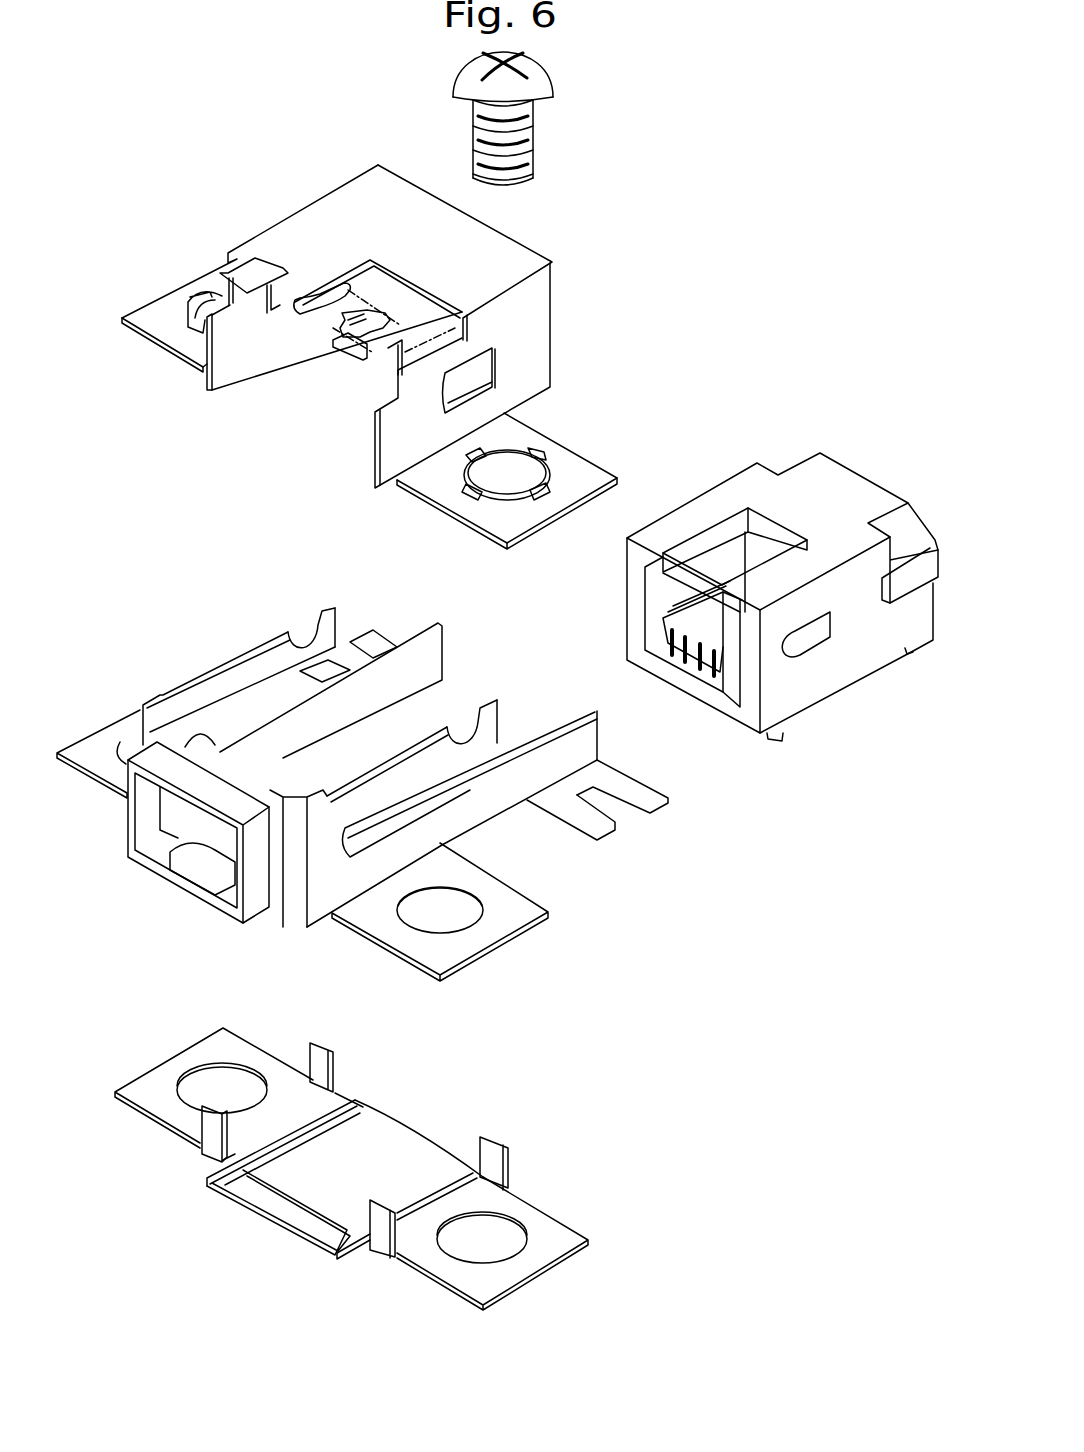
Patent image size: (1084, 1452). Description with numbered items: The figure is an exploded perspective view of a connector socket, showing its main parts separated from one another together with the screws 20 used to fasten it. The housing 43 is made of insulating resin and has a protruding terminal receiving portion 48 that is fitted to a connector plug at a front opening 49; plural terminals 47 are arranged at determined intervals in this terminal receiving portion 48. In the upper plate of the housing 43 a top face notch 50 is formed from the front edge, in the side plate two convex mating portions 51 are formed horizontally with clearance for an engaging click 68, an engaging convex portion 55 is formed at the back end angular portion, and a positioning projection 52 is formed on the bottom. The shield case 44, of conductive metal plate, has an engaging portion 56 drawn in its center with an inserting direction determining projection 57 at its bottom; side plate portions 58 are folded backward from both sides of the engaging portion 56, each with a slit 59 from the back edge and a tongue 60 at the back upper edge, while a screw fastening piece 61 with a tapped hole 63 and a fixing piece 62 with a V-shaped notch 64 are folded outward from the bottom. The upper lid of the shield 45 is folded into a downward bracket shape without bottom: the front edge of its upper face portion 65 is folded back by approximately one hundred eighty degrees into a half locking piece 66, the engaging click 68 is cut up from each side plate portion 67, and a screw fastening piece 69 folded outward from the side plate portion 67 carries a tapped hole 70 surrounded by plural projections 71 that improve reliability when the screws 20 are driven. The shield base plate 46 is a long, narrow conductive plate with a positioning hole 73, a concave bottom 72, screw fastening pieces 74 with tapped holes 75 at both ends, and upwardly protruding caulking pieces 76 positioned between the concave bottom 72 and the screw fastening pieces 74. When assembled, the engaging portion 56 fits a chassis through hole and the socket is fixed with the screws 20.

The screws 20 is at (540, 78).
The housing 43 is at (771, 616).
The shield case 44 is at (368, 776).
The upper lid of the shield 45 is at (372, 351).
The shield base plate 46 is at (368, 1154).
The terminals 47 is at (693, 625).
The terminal receiving portion 48 is at (735, 667).
The front opening 49 is at (653, 613).
The top face notch 50 is at (730, 540).
The convex mating portion 51 is at (880, 603).
The positioning projection 52 is at (780, 732).
The engaging convex portion 55 is at (922, 530).
The engaging portion 56 is at (147, 833).
The inserting direction determining projection 57 is at (197, 878).
The side plate portion 58 is at (255, 665).
The slit 59 is at (230, 700).
The tongue 60 is at (322, 620).
The screw fastening piece 61 is at (95, 752).
The fixing piece 62 is at (606, 802).
The tapped hole 63 is at (128, 740).
The V-shaped notch 64 is at (613, 817).
The upper face portion 65 is at (378, 190).
The half locking piece 66 is at (318, 318).
The side plate portion 67 is at (237, 365).
The engaging click 68 is at (475, 375).
The screw fastening piece 69 is at (150, 312).
The tapped hole 70 is at (215, 283).
The projection 71 is at (540, 497).
The concave bottom 72 is at (365, 1112).
The positioning hole 73 is at (283, 1200).
The screw fastening piece 74 is at (168, 1068).
The tapped hole 75 is at (250, 1072).
The caulking piece 76 is at (330, 1063).